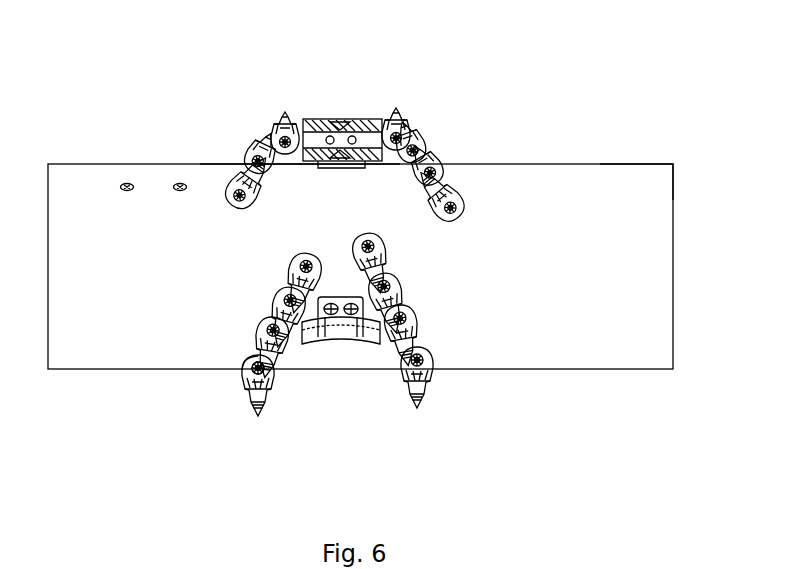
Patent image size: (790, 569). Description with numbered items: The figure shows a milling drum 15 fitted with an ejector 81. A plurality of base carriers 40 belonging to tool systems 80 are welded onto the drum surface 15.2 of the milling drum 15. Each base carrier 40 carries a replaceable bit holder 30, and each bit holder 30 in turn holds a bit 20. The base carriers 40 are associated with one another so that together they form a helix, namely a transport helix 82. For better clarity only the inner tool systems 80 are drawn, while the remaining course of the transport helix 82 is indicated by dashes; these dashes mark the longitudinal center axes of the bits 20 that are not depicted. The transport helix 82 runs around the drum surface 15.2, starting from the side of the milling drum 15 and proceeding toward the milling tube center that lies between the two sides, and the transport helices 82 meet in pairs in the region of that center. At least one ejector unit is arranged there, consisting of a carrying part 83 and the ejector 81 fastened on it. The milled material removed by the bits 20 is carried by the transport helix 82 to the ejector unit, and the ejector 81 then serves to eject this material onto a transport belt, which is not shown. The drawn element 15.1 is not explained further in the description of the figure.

The milling drum 15 is at (91, 133).
The upper edge of base plate 15.1 is at (150, 164).
The drum surface 15.2 is at (633, 150).
The tool system 80 is at (223, 135).
The ejector 81 is at (323, 118).
The transport helix 82 is at (562, 118).
The carrying part 83 is at (337, 322).
The bit 20 is at (262, 415).
The bit holder 30 is at (245, 385).
The base carrier 40 is at (248, 357).